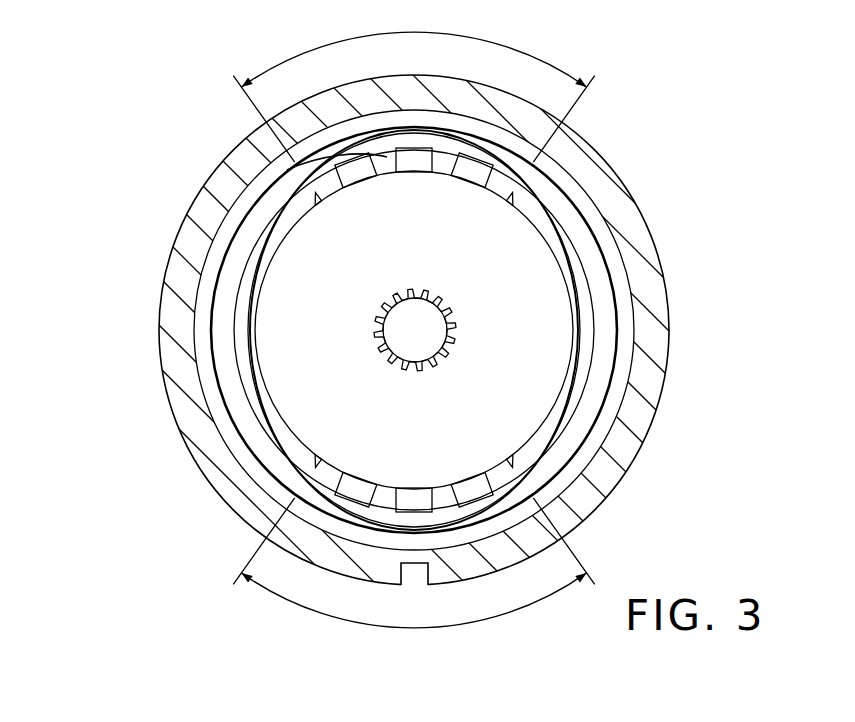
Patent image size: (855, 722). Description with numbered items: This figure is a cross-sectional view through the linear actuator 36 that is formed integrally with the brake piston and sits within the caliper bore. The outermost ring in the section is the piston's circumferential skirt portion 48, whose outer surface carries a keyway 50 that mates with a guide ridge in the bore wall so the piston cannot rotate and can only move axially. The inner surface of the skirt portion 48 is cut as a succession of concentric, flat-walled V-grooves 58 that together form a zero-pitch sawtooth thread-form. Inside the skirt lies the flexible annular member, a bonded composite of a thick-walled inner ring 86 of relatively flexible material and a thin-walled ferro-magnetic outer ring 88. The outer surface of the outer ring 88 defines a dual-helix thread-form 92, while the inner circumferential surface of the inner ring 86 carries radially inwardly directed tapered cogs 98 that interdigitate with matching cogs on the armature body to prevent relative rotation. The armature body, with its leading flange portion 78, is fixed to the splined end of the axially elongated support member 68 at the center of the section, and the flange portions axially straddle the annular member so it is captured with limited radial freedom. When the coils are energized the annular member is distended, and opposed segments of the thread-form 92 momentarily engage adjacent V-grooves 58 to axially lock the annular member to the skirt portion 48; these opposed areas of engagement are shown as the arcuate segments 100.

The linear actuator 36 is at (668, 116).
The skirt portion 48 is at (166, 296).
The keyway 50 is at (409, 577).
The V-grooves 58 is at (222, 427).
The support member 68 is at (415, 330).
The leading flange portion 78 is at (545, 287).
The inner ring 86 is at (493, 488).
The outer ring 88 is at (298, 470).
The thread-form 92 is at (577, 347).
The tapered cogs 98 is at (287, 170).
The arcuate segments 100 is at (245, 82).